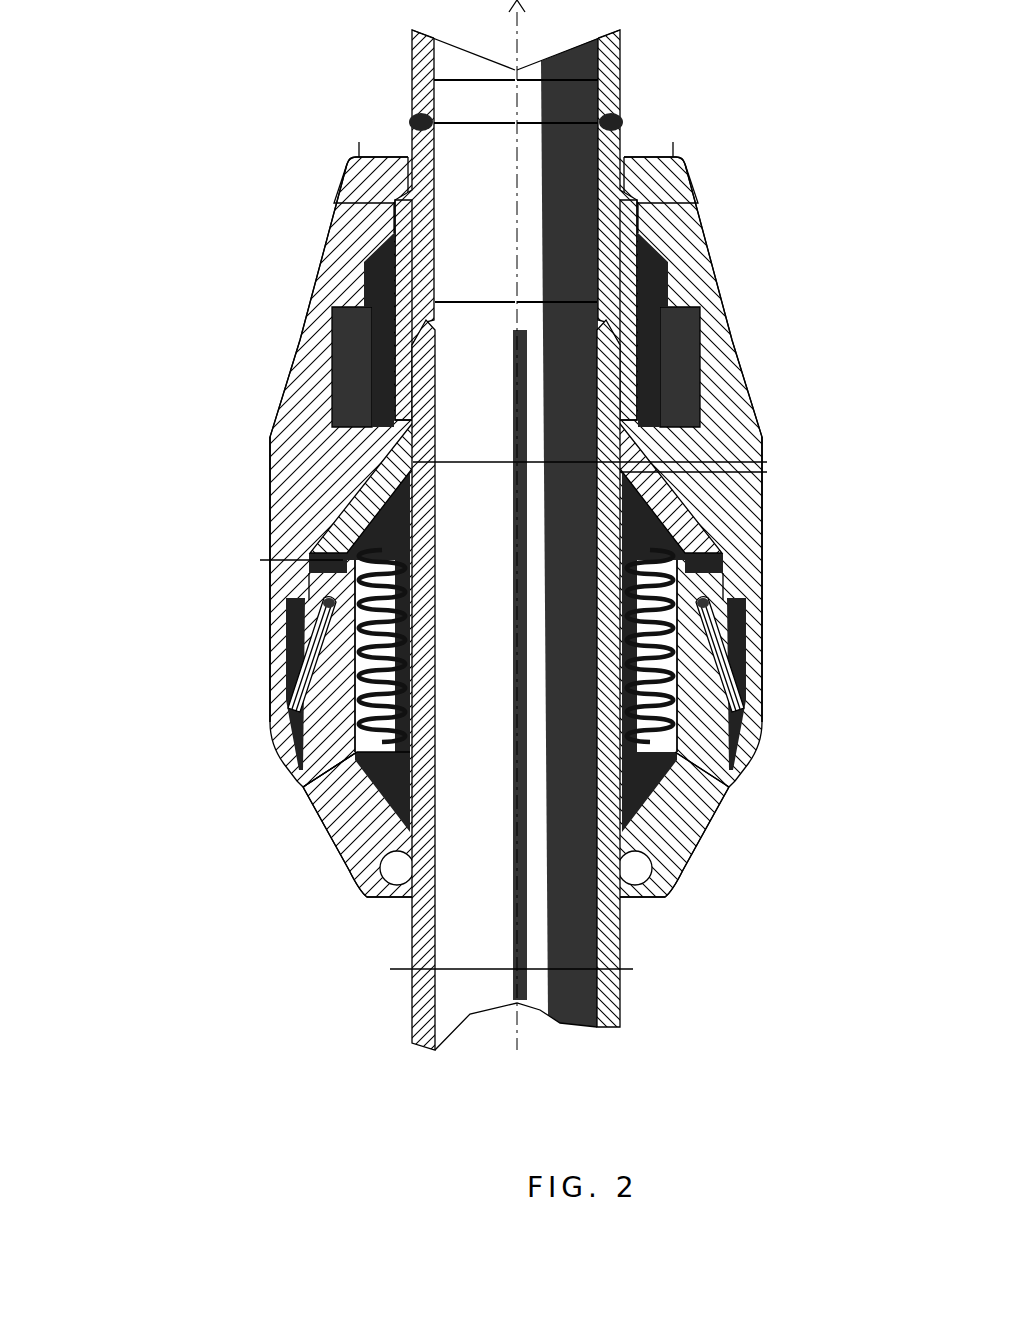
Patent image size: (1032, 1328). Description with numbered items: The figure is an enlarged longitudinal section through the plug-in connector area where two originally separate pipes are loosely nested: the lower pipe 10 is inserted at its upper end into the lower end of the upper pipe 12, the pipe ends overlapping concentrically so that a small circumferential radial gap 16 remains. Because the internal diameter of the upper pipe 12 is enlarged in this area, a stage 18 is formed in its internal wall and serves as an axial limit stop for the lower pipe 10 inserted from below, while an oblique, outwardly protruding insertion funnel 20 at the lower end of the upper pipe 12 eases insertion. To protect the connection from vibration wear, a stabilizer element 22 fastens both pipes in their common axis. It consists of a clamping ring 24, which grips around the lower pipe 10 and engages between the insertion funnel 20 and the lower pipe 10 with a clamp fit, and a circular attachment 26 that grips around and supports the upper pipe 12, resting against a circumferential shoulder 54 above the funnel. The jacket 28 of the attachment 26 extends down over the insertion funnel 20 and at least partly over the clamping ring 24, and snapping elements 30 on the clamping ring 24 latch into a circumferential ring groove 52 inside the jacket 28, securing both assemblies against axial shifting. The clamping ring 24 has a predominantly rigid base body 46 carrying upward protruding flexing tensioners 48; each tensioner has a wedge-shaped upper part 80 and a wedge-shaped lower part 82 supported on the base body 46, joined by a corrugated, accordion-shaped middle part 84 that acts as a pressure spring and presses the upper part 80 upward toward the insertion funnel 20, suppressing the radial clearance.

The lower pipe 10 is at (622, 990).
The upper pipe 12 is at (620, 72).
The radial gap 16 is at (700, 353).
The stage 18 is at (590, 296).
The insertion funnel 20 is at (727, 503).
The stabilizer element 22 is at (190, 553).
The clamping ring 24 is at (708, 773).
The attachment 26 is at (287, 355).
The jacket 28 is at (750, 563).
The snapping elements 30 is at (747, 643).
The base body 46 is at (315, 800).
The flexing tensioner 48 is at (275, 475).
The ring groove 52 is at (743, 693).
The circumferential shoulder 54 is at (643, 200).
The upper part 80 is at (277, 428).
The lower part 82 is at (337, 840).
The middle part 84 is at (360, 664).